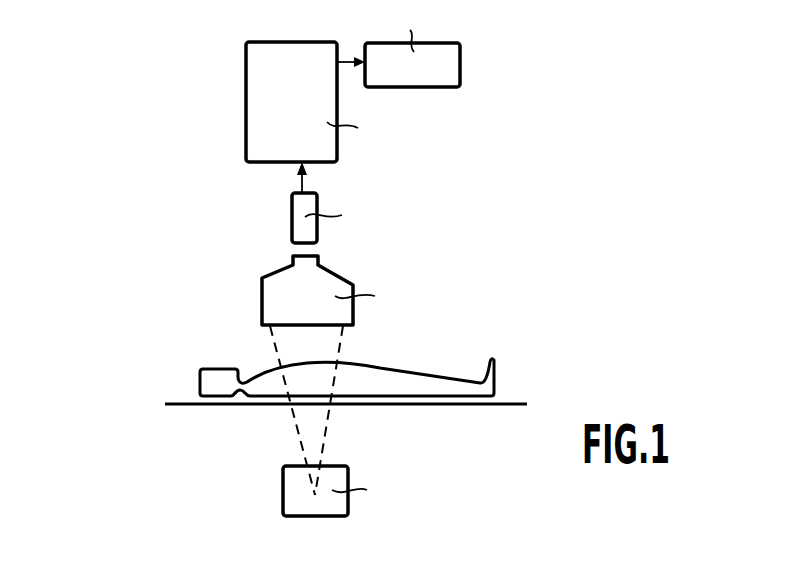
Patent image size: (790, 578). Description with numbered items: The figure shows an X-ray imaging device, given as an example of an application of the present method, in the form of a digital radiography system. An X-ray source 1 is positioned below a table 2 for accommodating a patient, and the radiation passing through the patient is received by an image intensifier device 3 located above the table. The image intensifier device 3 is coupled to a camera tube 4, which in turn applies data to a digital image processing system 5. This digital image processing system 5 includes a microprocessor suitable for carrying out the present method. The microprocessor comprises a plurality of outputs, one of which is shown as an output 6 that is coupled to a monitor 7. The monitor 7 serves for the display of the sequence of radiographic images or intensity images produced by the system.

The X-ray source 1 is at (283, 486).
The table 2 is at (221, 415).
The image intensifier device 3 is at (252, 277).
The camera tube 4 is at (280, 212).
The digital image processing system 5 is at (265, 103).
The output 6 is at (354, 44).
The monitor 7 is at (472, 70).